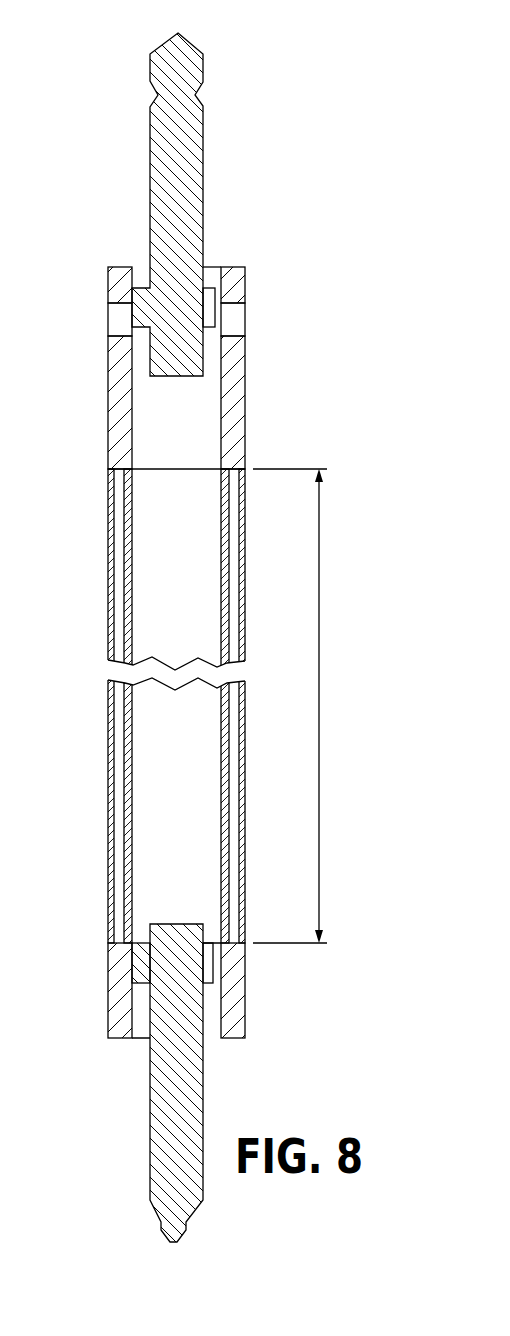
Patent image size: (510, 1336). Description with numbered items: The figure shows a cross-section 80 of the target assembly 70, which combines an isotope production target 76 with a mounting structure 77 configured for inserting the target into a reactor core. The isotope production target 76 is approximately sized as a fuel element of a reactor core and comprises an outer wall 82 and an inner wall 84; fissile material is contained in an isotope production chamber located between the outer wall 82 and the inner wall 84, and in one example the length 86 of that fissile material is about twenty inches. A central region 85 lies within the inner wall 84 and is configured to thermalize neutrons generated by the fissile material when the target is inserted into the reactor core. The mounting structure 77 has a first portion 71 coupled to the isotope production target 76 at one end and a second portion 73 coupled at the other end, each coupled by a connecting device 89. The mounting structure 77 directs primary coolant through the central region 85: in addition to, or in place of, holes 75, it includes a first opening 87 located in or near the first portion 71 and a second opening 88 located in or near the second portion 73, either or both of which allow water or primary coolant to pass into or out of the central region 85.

The target assembly 70 is at (170, 292).
The first portion 71 is at (107, 402).
The second portion 73 is at (108, 986).
The holes 75 is at (112, 319).
The isotope production target 76 is at (107, 578).
The mounting structure 77 is at (148, 1120).
The cross-section 80 is at (260, 183).
The outer wall 82 is at (245, 741).
The inner wall 84 is at (220, 741).
The central region 85 is at (191, 807).
The length 86 is at (321, 713).
The first opening 87 is at (214, 266).
The second opening 88 is at (207, 1040).
The connecting device 89 is at (141, 943).